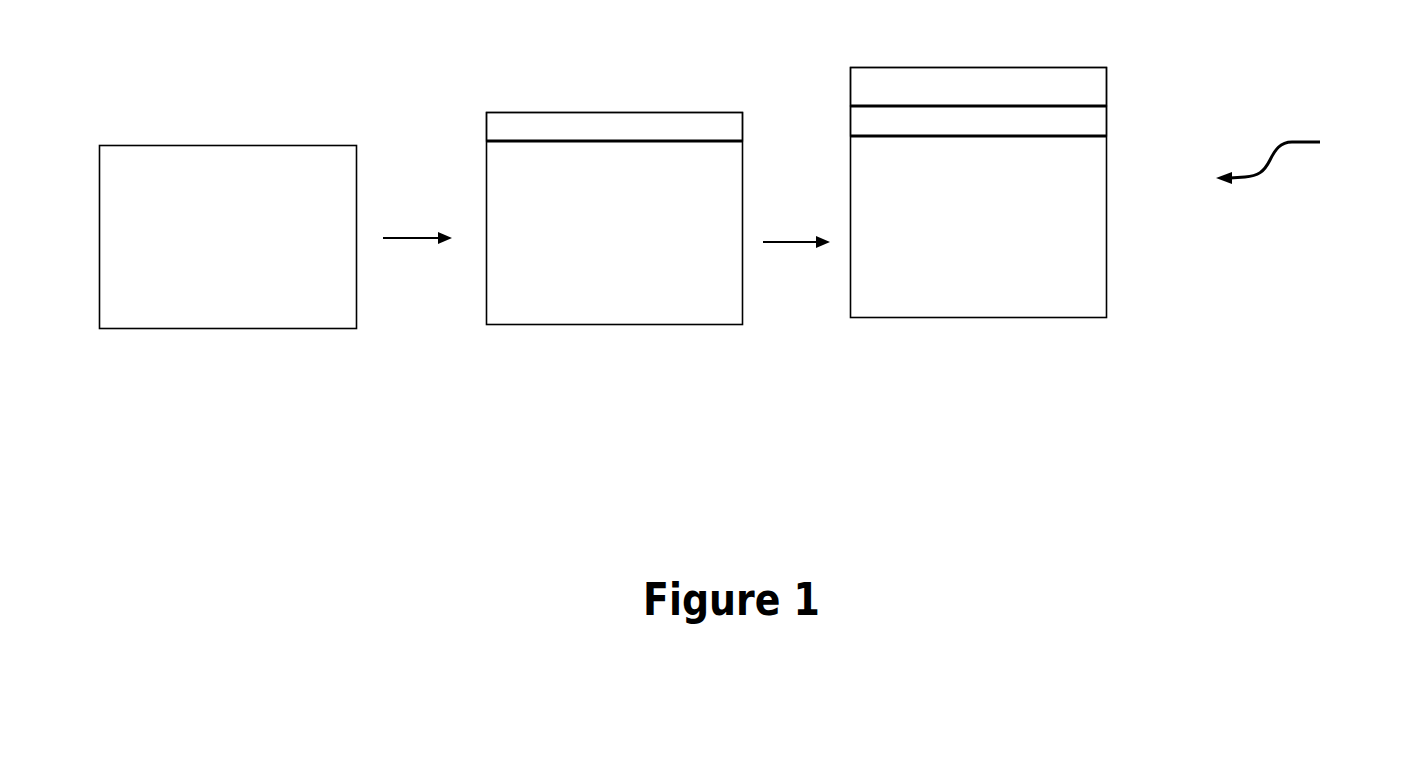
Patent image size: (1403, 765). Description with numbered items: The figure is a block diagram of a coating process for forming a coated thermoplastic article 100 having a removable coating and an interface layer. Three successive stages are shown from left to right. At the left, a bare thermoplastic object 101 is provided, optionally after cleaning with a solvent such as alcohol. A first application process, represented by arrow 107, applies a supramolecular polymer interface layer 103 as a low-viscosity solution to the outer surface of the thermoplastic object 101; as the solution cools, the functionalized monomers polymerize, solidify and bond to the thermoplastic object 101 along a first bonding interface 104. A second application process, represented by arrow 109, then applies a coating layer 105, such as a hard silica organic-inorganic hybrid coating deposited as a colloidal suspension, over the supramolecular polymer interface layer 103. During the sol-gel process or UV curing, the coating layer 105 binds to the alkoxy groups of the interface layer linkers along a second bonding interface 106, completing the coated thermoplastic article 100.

The coated thermoplastic article 100 is at (1295, 157).
The thermoplastic object 101 is at (256, 246).
The supramolecular polymer interface layer 103 is at (486, 118).
The first bonding interface 104 is at (658, 140).
The coating layer 105 is at (1107, 75).
The second bonding interface 106 is at (1107, 106).
The arrow 107 is at (417, 224).
The arrow 109 is at (796, 227).